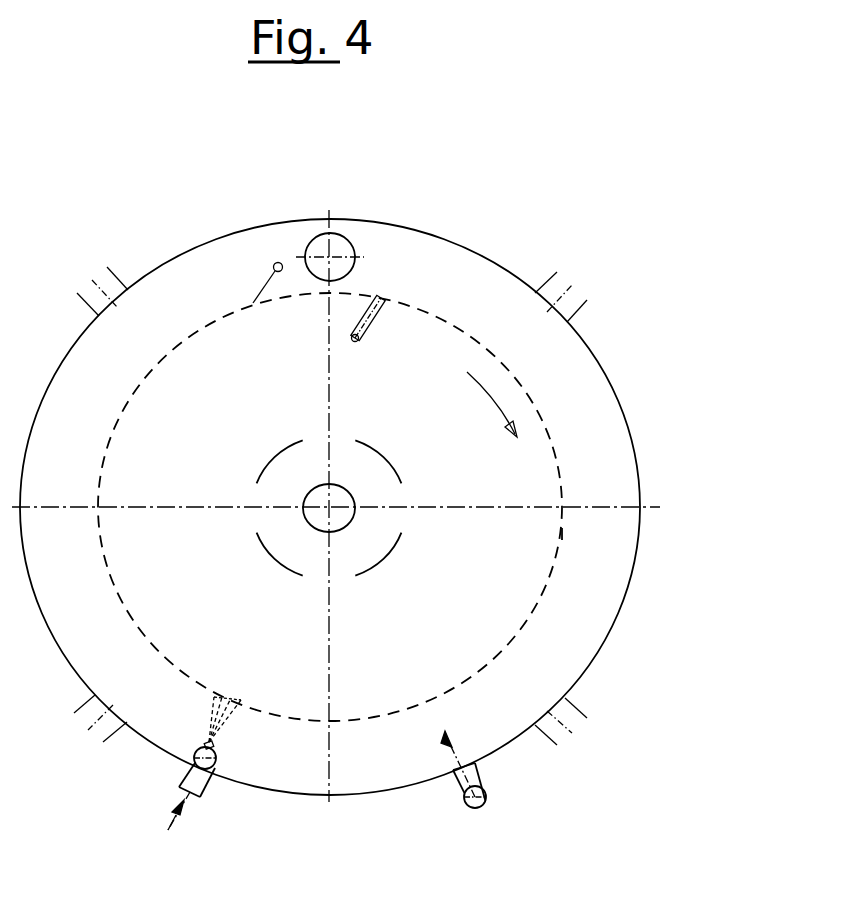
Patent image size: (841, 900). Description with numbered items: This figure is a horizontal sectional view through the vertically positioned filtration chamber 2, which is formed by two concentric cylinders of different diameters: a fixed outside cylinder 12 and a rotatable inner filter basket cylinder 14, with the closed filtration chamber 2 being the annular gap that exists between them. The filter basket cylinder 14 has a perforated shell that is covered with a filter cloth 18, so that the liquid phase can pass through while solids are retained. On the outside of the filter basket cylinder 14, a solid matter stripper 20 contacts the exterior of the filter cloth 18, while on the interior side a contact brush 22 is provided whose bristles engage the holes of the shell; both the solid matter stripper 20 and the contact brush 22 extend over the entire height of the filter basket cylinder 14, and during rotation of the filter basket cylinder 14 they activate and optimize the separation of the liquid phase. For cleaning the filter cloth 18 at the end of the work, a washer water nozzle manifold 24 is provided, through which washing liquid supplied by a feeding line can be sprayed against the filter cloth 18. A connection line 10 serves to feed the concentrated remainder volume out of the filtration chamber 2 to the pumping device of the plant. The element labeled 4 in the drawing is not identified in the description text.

The filtration chamber 2 is at (596, 467).
The nozzle 4 is at (470, 780).
The connection line 10 is at (340, 245).
The outside cylinder 12 is at (617, 397).
The filter basket cylinder 14 is at (510, 372).
The filter cloth 18 is at (563, 537).
The solid matter stripper 20 is at (258, 290).
The contact brush 22 is at (377, 318).
The washer water nozzle manifold 24 is at (205, 775).